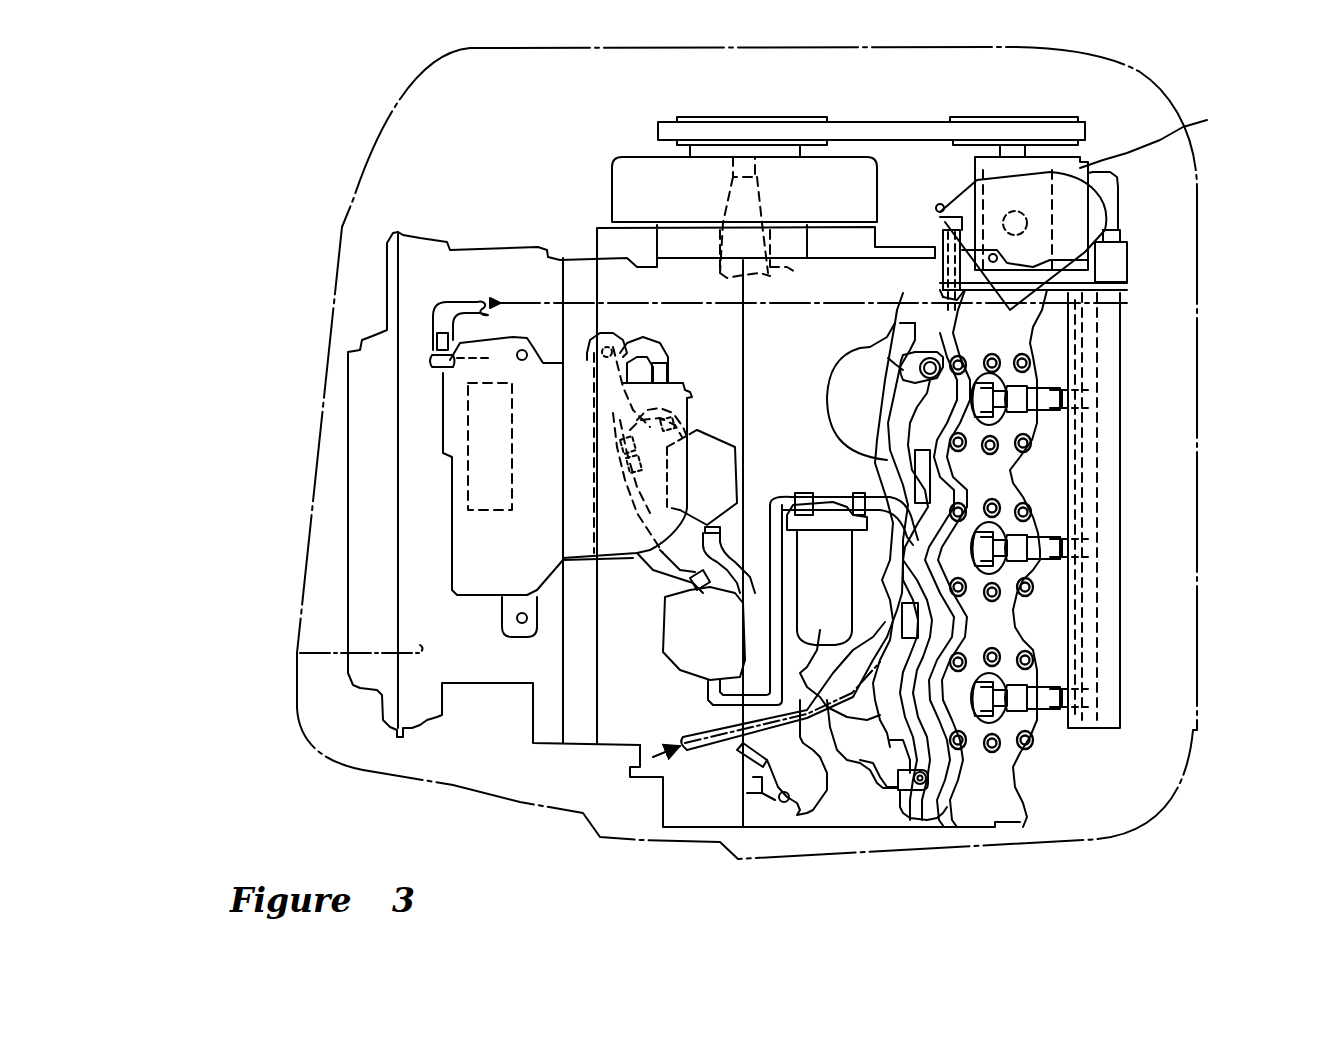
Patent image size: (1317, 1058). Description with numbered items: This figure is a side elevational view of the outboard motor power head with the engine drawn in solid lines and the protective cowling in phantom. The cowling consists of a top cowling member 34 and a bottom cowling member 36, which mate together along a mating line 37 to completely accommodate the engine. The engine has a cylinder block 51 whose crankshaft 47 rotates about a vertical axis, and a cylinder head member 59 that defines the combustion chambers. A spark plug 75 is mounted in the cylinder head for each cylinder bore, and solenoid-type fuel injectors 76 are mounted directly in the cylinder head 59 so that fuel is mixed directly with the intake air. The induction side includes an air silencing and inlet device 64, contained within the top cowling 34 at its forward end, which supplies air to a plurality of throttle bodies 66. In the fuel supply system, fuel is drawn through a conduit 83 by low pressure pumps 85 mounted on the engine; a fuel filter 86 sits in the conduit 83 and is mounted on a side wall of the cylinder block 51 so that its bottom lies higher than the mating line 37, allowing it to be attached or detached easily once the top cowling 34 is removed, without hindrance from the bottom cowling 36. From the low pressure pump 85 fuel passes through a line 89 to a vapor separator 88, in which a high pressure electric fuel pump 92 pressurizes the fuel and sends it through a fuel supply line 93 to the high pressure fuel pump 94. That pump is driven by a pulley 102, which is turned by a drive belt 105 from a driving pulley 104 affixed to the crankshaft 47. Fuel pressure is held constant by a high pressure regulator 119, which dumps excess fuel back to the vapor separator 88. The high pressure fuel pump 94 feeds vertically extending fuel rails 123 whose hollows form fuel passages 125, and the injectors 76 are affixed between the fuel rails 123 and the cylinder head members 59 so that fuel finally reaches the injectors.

The top cowling member 34 is at (1163, 96).
The bottom cowling member 36 is at (1197, 730).
The mating line 37 is at (1108, 662).
The crankshaft 47 is at (795, 277).
The cylinder block 51 is at (880, 830).
The cylinder head member 59 is at (1018, 830).
The air silencing and inlet device 64 is at (365, 695).
The throttle body 66 is at (505, 250).
The spark plug 75 is at (1033, 727).
The fuel injector 76 is at (1057, 672).
The conduit 83 is at (717, 740).
The second low pressure pump 85 is at (713, 430).
The fuel filter 86 is at (813, 503).
The vapor separator 88 is at (480, 600).
The line 89 is at (660, 563).
The high pressure electric fuel pump 92 is at (467, 473).
The fuel supply line 93 is at (687, 307).
The high pressure fuel pump 94 is at (1120, 208).
The pulley 102 is at (1015, 115).
The driving pulley 104 is at (673, 113).
The drive belt 105 is at (917, 140).
The high pressure regulator 119 is at (1110, 185).
The fuel rail 123 is at (1103, 730).
The fuel passage 125 is at (1090, 482).